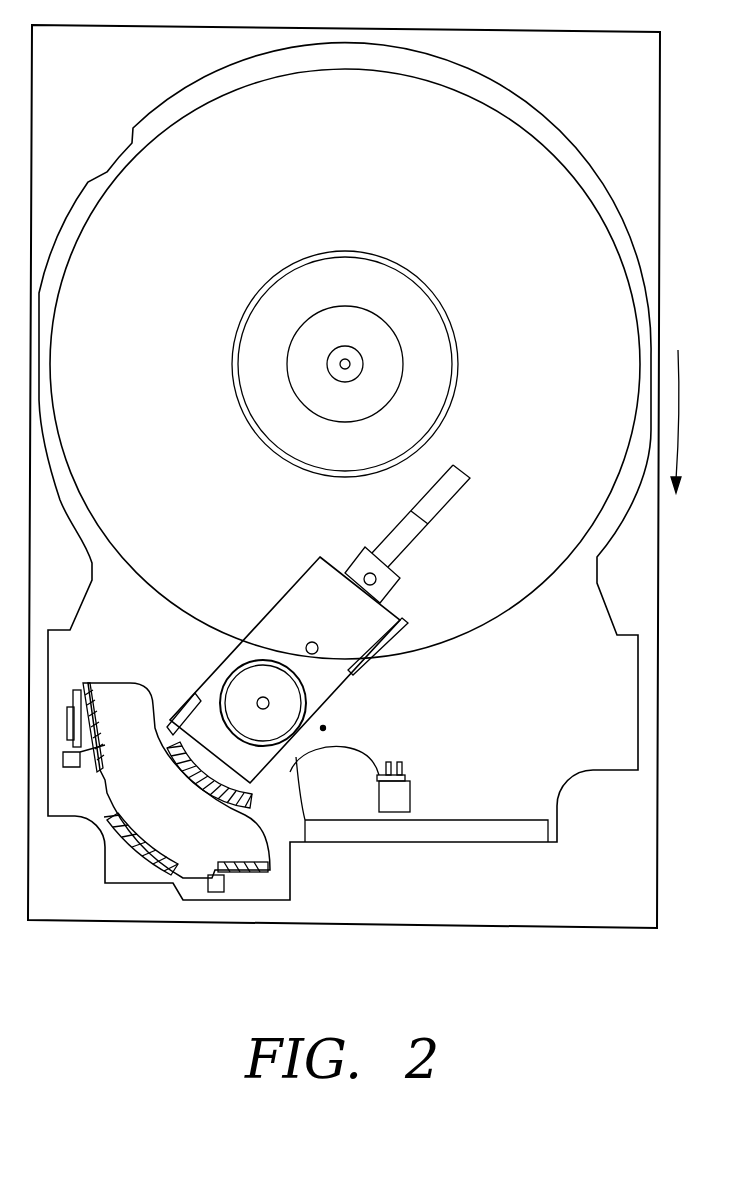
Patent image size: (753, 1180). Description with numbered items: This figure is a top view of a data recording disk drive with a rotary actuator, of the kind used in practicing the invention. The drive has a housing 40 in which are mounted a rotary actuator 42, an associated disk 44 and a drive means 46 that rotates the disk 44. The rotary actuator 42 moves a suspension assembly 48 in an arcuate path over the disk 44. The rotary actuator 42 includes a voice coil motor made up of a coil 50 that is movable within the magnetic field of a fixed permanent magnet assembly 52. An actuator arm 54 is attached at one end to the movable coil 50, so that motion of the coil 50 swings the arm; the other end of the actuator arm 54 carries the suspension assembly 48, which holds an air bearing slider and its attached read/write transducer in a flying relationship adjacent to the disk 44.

The housing 40 is at (645, 717).
The rotary actuator 42 is at (333, 727).
The disk 44 is at (615, 294).
The drive means 46 is at (298, 450).
The suspension assembly 48 is at (460, 508).
The coil 50 is at (152, 865).
The permanent magnet assembly 52 is at (150, 827).
The actuator arm 54 is at (352, 670).